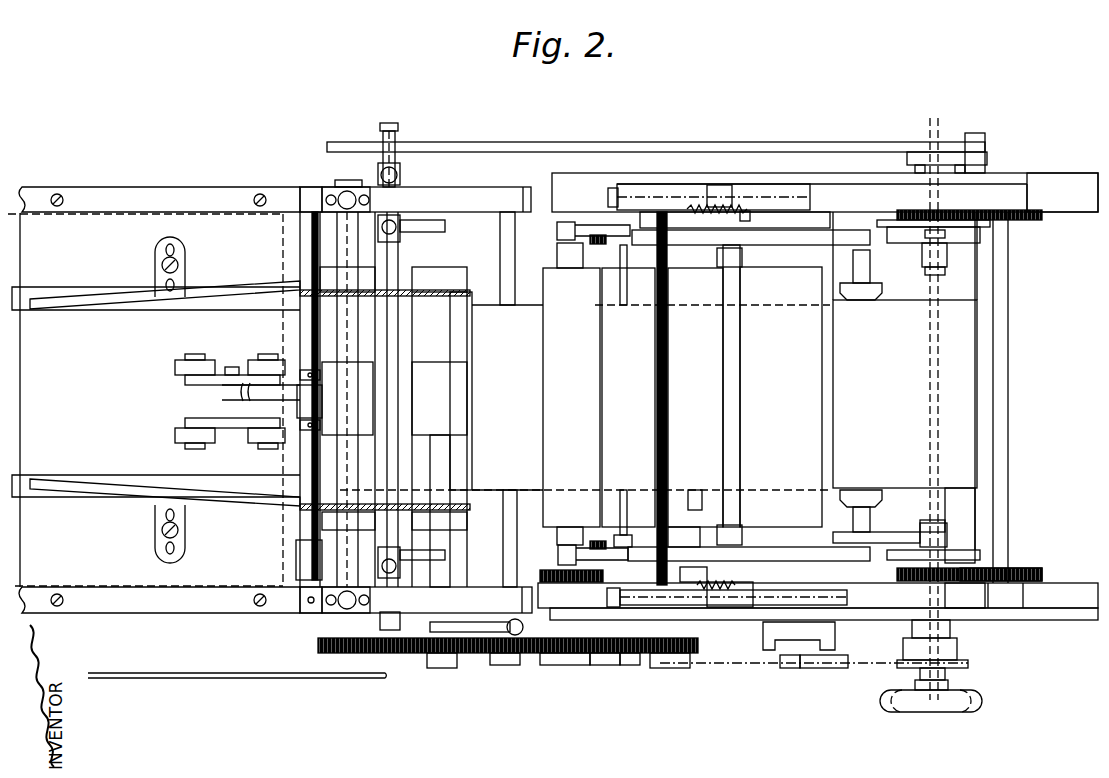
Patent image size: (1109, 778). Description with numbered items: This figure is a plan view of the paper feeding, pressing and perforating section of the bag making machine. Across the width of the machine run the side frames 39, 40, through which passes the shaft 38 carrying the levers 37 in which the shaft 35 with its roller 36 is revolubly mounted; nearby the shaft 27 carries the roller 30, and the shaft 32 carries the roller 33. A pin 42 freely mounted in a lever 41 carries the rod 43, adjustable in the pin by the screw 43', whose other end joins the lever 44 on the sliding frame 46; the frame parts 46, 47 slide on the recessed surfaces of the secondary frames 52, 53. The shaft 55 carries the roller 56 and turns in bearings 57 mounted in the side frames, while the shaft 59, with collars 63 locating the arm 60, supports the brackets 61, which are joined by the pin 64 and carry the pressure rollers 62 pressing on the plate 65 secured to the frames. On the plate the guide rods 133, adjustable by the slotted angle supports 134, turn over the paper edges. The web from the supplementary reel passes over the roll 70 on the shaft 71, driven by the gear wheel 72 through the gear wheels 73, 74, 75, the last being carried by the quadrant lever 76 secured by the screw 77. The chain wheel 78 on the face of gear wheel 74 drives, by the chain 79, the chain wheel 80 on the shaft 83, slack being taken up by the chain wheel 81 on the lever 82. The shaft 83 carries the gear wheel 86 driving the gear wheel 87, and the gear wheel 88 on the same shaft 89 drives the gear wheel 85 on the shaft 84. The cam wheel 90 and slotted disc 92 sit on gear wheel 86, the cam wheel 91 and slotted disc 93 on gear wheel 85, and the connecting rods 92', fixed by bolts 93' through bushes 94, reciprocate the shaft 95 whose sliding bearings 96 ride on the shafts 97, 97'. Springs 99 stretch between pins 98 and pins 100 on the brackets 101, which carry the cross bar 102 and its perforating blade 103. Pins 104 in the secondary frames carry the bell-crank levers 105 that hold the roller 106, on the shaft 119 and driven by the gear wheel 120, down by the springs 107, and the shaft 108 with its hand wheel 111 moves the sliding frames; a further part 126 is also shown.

The shaft 27 is at (288, 590).
The roller 30 is at (316, 272).
The shaft 32 is at (455, 253).
The roller 33 is at (467, 517).
The shaft 35 is at (453, 477).
The roller 36 is at (468, 430).
The levers 37 is at (420, 228).
The shaft 38 is at (400, 395).
The side frame 39 is at (113, 614).
The side frame 40 is at (90, 200).
The lever 41 is at (400, 178).
The pin 42 is at (394, 140).
The rod 43 is at (656, 120).
The screw 43' is at (350, 110).
The lever 44 is at (985, 168).
The sliding frame 46 is at (1020, 587).
The sliding frame 47 is at (1028, 195).
The secondary frame 52 is at (1045, 585).
The secondary frame 53 is at (1088, 170).
The shaft 55 is at (347, 462).
The roller 56 is at (347, 398).
The bearings 57 is at (325, 190).
The shaft 59 is at (303, 558).
The arm 60 is at (225, 400).
The brackets 61 is at (193, 378).
The pressure rollers 62 is at (185, 368).
The collars 63 is at (305, 375).
The pin 64 is at (228, 368).
The plate 65 is at (22, 528).
The roll 70 is at (694, 494).
The shaft 71 is at (676, 545).
The gear wheel 72 is at (680, 668).
The gear wheel 73 is at (635, 666).
The gear wheel 74 is at (600, 666).
The gear wheel 75 is at (530, 656).
The quadrant lever 76 is at (482, 655).
The screw 77 is at (447, 668).
The chain wheel 78 is at (570, 666).
The chain 79 is at (792, 666).
The chain wheel 80 is at (968, 666).
The chain wheel 81 is at (847, 668).
The lever 82 is at (790, 642).
The shaft 83 is at (937, 645).
The shaft 84 is at (934, 394).
The gear wheel 85 is at (975, 236).
The gear wheel 86 is at (957, 585).
The gear wheel 87 is at (1022, 570).
The gear wheel 88 is at (1030, 220).
The shaft 89 is at (1010, 388).
The cam wheel 90 is at (955, 560).
The cam wheel 91 is at (942, 240).
The slotted disc 92 is at (1021, 541).
The connecting rods 92' is at (882, 396).
The slotted disc 93 is at (972, 254).
The bolts 93' is at (914, 399).
The bushes 94 is at (945, 262).
The shaft 95 is at (726, 432).
The sliding bearings 96 is at (716, 192).
The shaft 97 is at (727, 533).
The shaft 97' is at (709, 149).
The pins 98 is at (748, 214).
The springs 99 is at (712, 237).
The pins 100 is at (690, 207).
The brackets 101 is at (742, 218).
The cross bar 102 is at (657, 404).
The perforating blade 103 is at (667, 396).
The pins 104 is at (623, 252).
The bell-crank levers 105 is at (600, 225).
The roller 106 is at (556, 388).
The springs 107 is at (598, 243).
The shaft 108 is at (935, 383).
The hand wheel 111 is at (938, 712).
The shaft 119 is at (570, 253).
The gear wheel 120 is at (558, 575).
The block 126 is at (912, 158).
The guide rods 133 is at (136, 300).
The slotted angle supports 134 is at (186, 285).